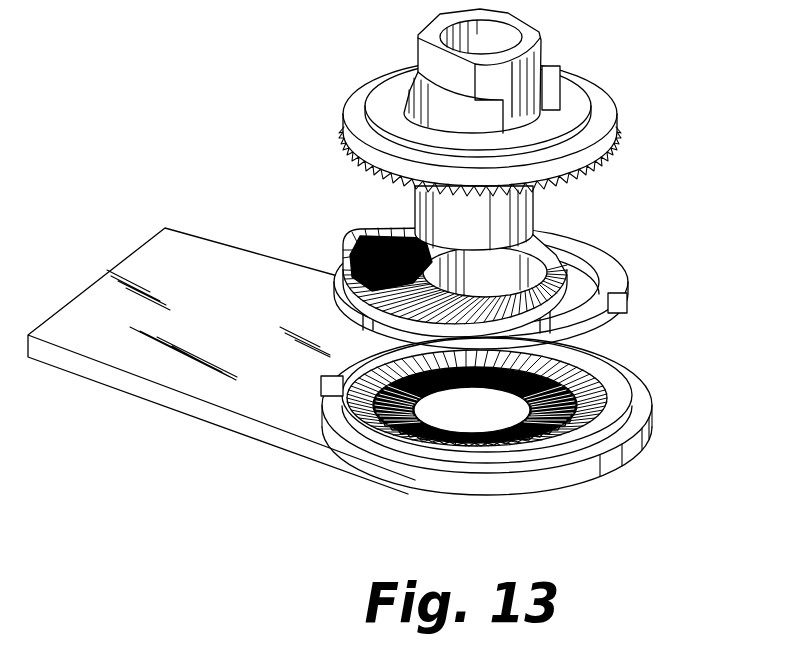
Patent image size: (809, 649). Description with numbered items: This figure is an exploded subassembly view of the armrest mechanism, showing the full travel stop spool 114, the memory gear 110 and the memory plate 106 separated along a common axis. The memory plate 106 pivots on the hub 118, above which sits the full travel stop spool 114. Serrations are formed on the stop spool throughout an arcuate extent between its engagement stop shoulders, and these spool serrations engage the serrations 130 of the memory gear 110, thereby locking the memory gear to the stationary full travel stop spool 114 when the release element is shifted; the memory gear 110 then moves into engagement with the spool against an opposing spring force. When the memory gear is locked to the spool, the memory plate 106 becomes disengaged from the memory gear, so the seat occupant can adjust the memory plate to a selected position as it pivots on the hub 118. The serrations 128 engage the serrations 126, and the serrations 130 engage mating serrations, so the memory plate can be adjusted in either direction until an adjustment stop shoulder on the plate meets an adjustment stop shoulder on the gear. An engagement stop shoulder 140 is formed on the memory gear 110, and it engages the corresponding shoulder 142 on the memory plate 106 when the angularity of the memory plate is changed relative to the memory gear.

The memory plate 106 is at (251, 333).
The memory gear 110 is at (630, 262).
The full travel stop spool 114 is at (605, 92).
The hub 118 is at (547, 212).
The serrations 126 is at (368, 401).
The serrations 128 is at (419, 456).
The serrations 130 is at (357, 230).
The engagement stop shoulder 140 is at (622, 320).
The shoulder 142 is at (333, 394).